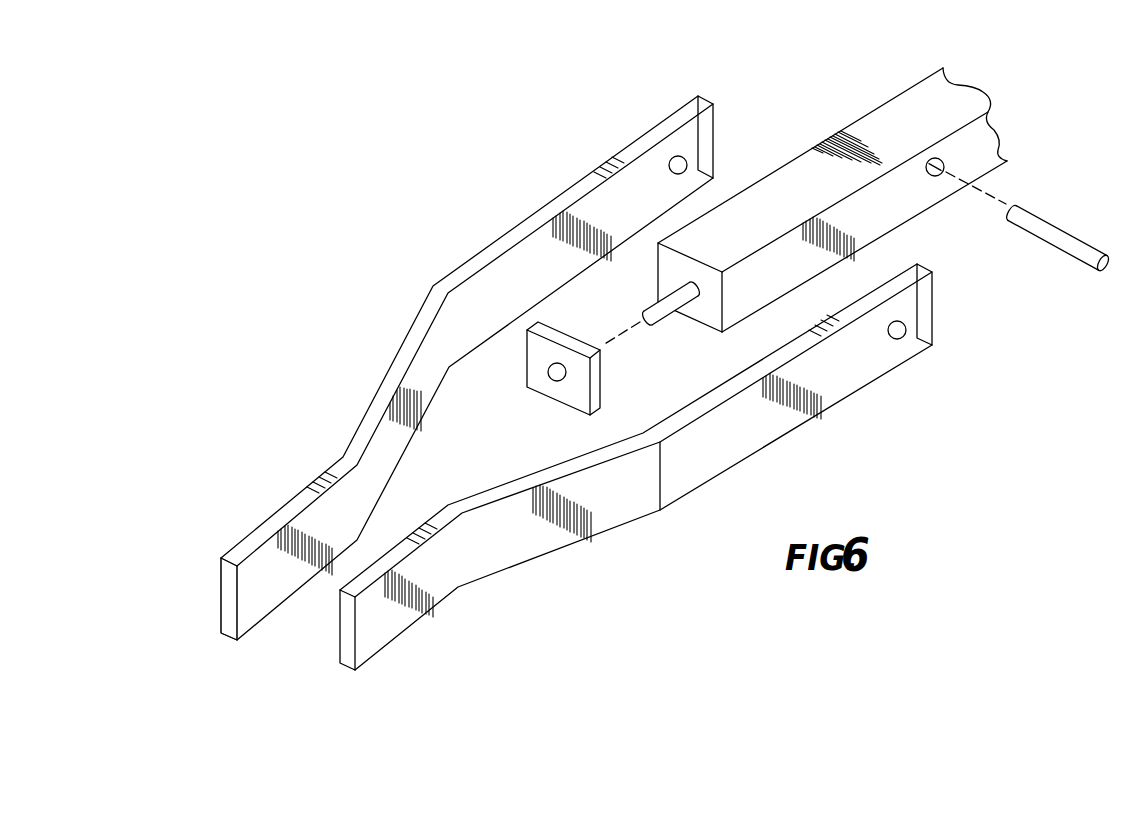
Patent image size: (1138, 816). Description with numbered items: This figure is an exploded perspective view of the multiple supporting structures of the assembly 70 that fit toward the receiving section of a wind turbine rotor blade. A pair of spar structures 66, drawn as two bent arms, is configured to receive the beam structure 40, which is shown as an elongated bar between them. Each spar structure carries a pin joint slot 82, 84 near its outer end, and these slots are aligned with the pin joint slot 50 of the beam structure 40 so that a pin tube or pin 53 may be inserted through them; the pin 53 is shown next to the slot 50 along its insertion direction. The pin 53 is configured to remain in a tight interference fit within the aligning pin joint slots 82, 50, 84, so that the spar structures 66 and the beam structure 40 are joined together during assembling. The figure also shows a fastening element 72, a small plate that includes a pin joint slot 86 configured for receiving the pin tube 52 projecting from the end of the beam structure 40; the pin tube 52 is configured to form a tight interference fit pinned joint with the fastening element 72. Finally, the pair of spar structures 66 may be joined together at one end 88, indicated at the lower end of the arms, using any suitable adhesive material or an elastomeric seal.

The assembly 70 is at (458, 135).
The spar structures 66 is at (447, 280).
The pin joint slot 84 is at (692, 161).
The pin joint slot 82 is at (906, 330).
The end 88 is at (277, 655).
The beam structure 40 is at (877, 127).
The pin joint slot 50 is at (944, 162).
The pin tube 52 is at (647, 313).
The pin 53 is at (1048, 226).
The fastening element 72 is at (558, 328).
The pin joint slot 86 is at (568, 392).